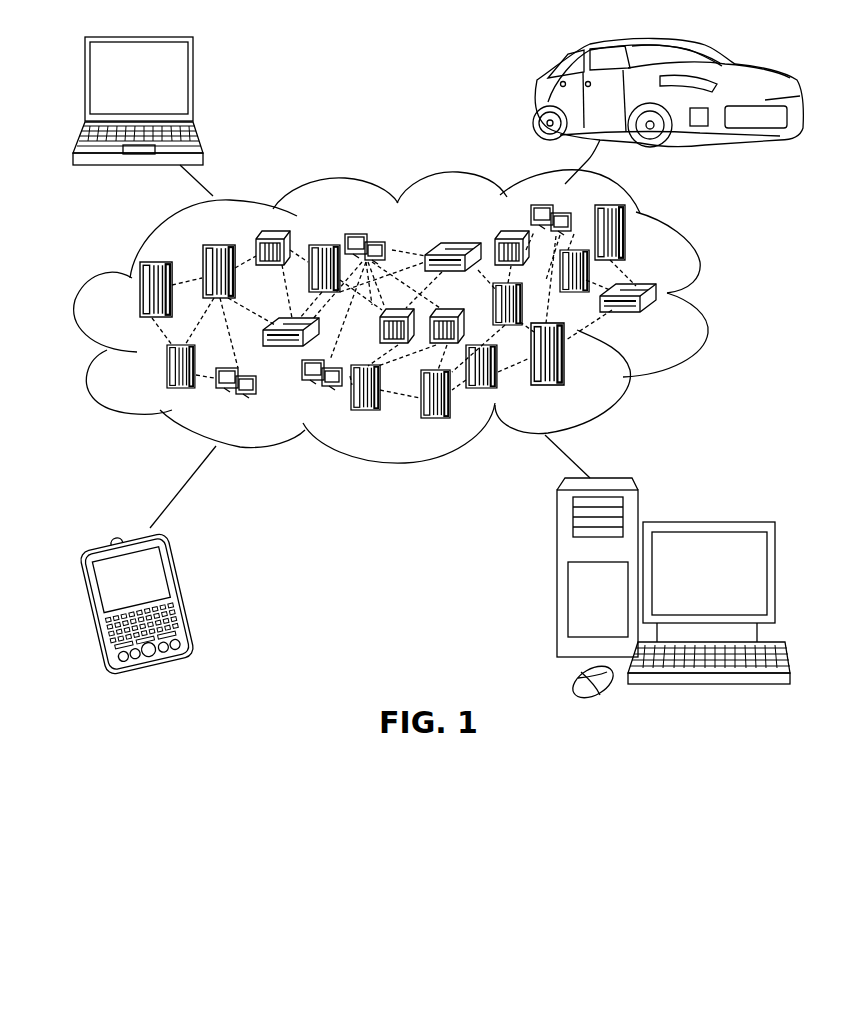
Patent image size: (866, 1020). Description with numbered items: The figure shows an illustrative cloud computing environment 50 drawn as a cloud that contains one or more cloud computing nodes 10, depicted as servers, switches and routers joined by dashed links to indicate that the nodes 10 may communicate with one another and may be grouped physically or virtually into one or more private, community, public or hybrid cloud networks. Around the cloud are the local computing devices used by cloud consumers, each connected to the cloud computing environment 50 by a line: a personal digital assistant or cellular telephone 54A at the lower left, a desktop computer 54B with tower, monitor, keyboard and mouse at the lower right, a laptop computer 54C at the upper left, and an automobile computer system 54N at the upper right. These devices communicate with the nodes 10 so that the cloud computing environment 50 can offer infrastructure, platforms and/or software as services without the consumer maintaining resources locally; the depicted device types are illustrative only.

The cloud computing node 10 is at (666, 324).
The cloud computing environment 50 is at (707, 298).
The personal digital assistant or cellular telephone 54A is at (186, 599).
The desktop computer 54B is at (706, 522).
The laptop computer 54C is at (196, 86).
The automobile computer system 54N is at (535, 97).